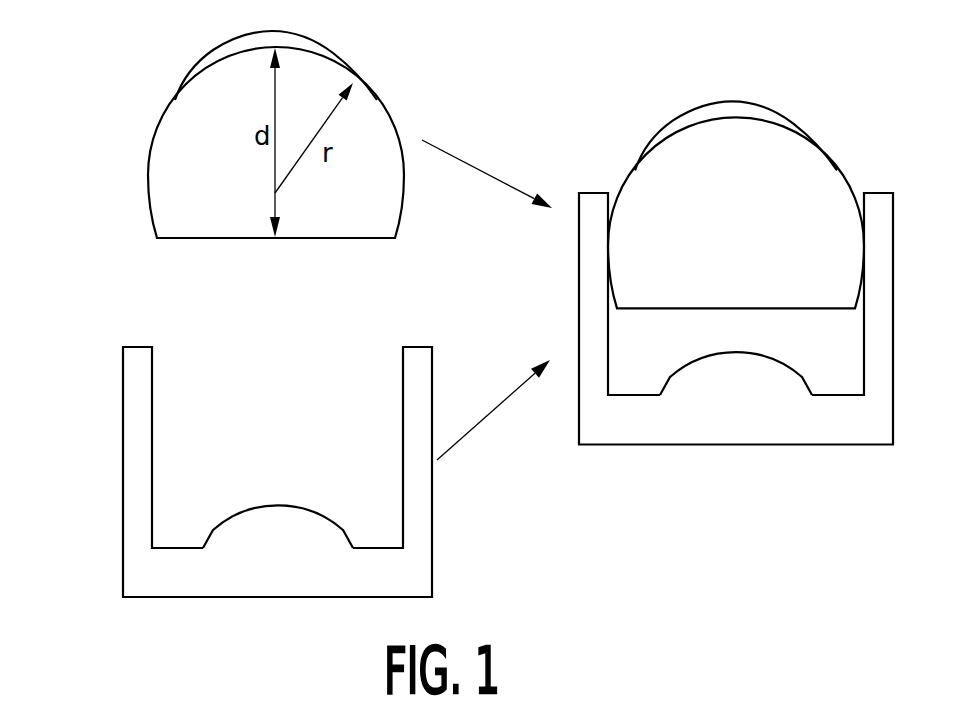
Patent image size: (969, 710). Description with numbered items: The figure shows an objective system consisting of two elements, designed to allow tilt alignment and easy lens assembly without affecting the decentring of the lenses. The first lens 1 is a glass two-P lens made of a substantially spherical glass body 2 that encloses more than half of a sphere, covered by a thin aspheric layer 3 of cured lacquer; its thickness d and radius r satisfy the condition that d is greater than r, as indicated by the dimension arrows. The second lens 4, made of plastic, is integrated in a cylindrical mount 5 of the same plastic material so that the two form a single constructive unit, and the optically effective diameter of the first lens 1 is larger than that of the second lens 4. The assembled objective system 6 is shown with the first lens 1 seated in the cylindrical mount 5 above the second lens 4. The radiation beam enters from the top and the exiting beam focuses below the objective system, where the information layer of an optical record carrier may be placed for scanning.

The glass-2P lens 1 is at (230, 138).
The glass body 2 is at (175, 180).
The aspheric layer 3 is at (188, 72).
The second lens 4 is at (257, 528).
The cylindrical mount 5 is at (133, 440).
The objective system 6 is at (747, 514).